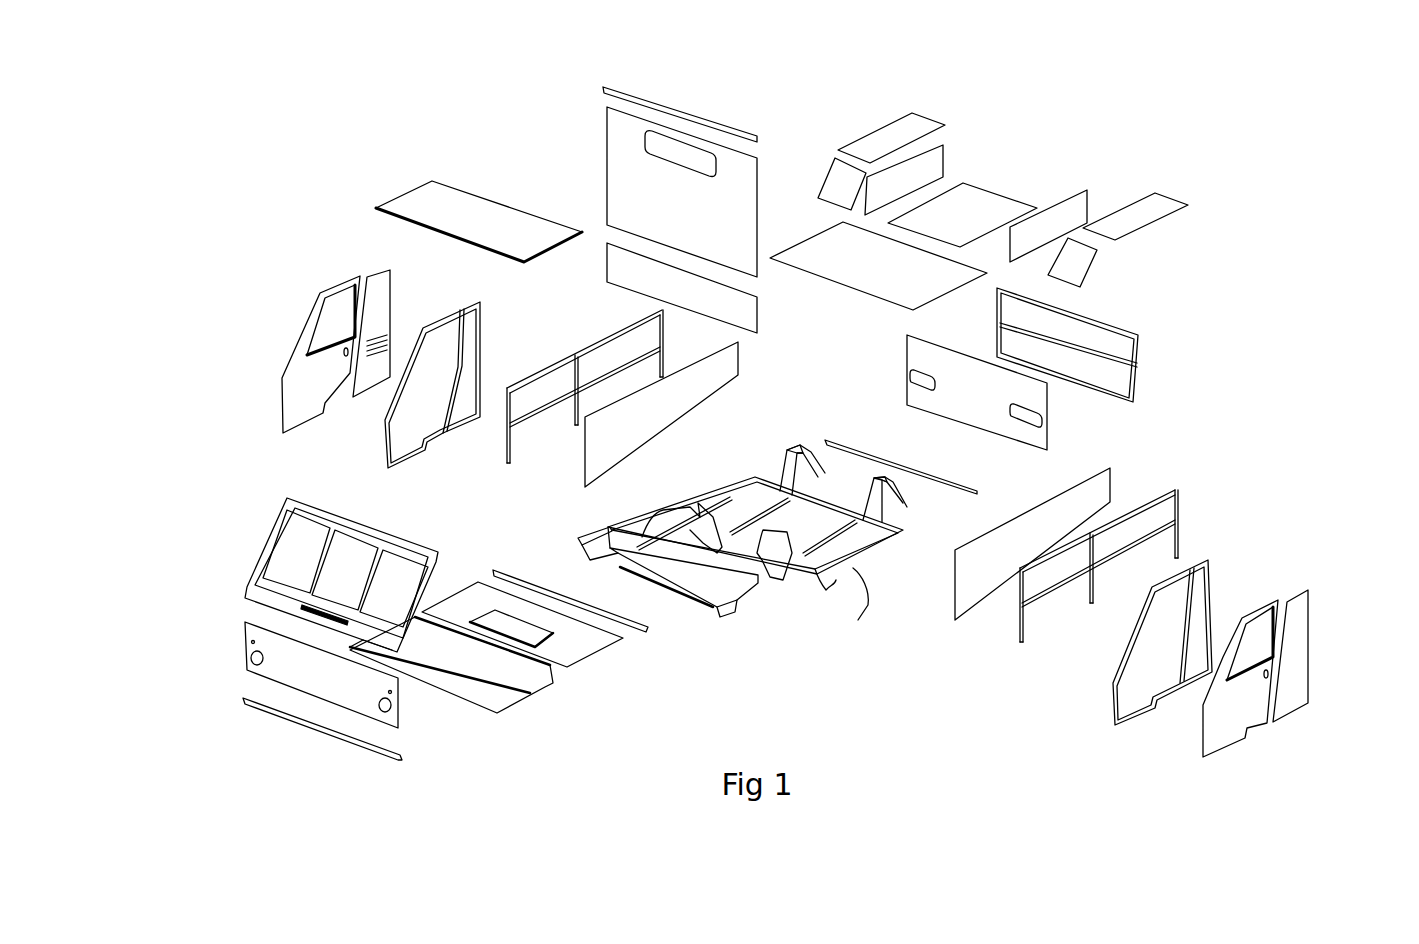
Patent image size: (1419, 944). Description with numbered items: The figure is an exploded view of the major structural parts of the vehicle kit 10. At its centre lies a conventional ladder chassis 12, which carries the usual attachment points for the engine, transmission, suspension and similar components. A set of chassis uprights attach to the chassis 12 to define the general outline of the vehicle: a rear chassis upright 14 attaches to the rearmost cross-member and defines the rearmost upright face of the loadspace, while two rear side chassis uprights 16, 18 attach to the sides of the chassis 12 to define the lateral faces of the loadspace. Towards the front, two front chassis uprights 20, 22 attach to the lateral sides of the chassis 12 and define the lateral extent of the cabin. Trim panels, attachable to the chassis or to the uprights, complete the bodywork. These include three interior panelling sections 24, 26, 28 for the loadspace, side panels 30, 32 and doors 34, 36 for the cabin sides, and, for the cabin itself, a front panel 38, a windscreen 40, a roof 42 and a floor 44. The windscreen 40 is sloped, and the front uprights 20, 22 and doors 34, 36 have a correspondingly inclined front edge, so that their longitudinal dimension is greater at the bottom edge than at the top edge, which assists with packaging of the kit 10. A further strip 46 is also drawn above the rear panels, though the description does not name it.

The kit 10 is at (1172, 265).
The ladder chassis 12 is at (864, 567).
The rear chassis upright 14 is at (1138, 360).
The rear side chassis upright 16 is at (1178, 540).
The rear side chassis upright 18 is at (600, 340).
The front chassis upright 20 is at (1113, 690).
The front chassis upright 22 is at (383, 447).
The interior panelling section 24 is at (1006, 178).
The interior panelling section 26 is at (1112, 485).
The interior panelling section 28 is at (675, 427).
The side panel 30 is at (1298, 663).
The side panel 32 is at (377, 272).
The door 34 is at (1232, 712).
The door 36 is at (307, 367).
The front panel 38 is at (295, 667).
The windscreen 40 is at (262, 552).
The roof 42 is at (470, 205).
The floor 44 is at (568, 701).
The rear wall strip 46 is at (678, 108).